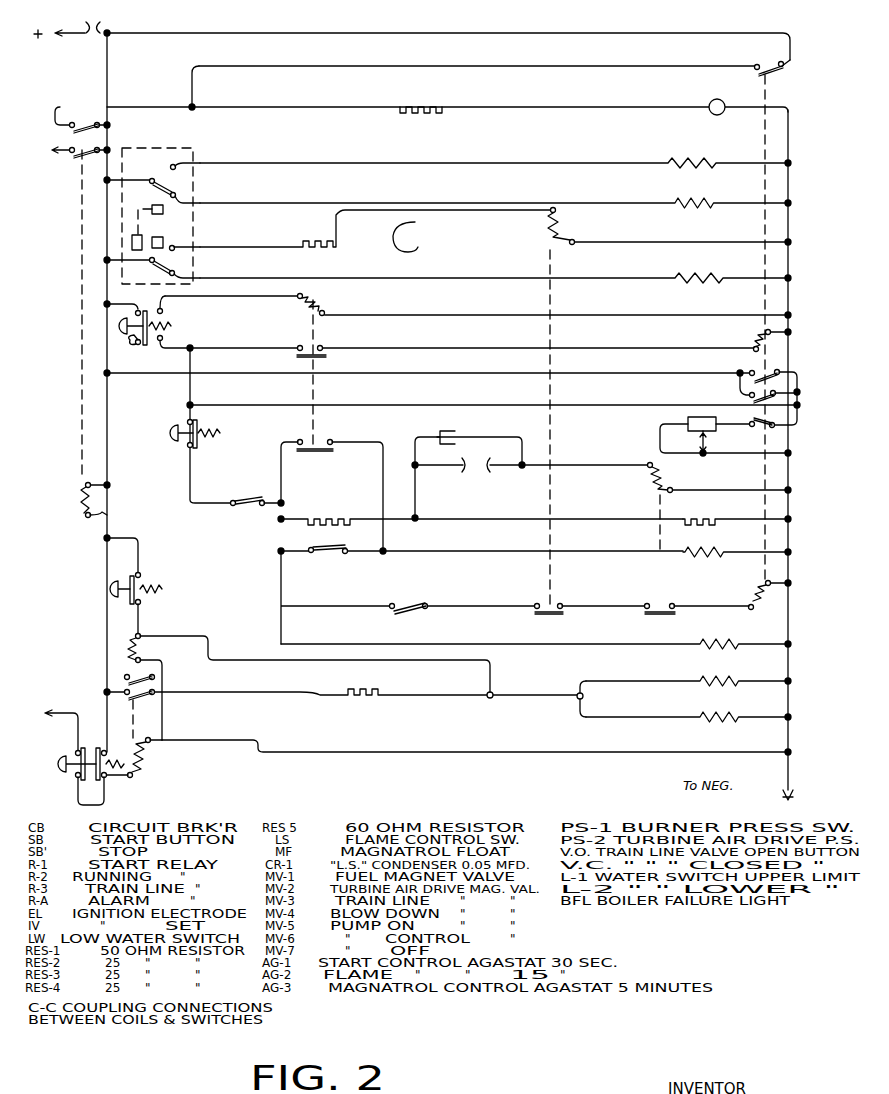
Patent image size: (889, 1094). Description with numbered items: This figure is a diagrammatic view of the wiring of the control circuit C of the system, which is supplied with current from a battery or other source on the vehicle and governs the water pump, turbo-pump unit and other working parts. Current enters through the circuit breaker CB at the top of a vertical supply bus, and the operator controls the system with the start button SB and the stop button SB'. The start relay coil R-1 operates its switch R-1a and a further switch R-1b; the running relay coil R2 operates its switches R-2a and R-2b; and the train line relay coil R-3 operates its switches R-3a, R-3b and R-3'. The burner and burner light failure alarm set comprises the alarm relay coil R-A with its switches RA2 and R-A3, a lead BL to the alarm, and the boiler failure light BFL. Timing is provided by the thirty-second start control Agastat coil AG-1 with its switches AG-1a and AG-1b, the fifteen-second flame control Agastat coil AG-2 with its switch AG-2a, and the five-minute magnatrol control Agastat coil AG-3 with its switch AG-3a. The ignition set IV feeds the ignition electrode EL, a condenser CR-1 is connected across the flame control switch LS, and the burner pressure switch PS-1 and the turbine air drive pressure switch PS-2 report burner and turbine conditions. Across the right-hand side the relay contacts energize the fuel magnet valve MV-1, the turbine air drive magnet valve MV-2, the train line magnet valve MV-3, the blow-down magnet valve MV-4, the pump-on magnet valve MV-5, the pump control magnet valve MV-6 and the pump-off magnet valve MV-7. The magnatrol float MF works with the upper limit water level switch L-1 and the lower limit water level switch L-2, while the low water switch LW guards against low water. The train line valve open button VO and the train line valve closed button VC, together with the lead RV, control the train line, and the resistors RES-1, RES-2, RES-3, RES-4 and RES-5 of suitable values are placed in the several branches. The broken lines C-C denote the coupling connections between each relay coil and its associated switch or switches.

The circuit breaker CB is at (67, 22).
The alarm relay coil R-A is at (76, 86).
The alarm relay switch RA2 is at (90, 119).
The alarm relay switch R-A3 is at (100, 150).
The alarm bell lead BL is at (56, 159).
The magnatrol float MF is at (171, 216).
The upper limit water level switch L-1 is at (152, 183).
The lower limit water level switch L-2 is at (152, 262).
The pump-off magnet valve MV-7 is at (495, 153).
The pump control magnet valve MV-6 is at (495, 194).
The pump-on magnet valve MV-5 is at (495, 269).
The resistor RES-3 is at (375, 238).
The resistor RES-4 is at (419, 119).
The circuit C is at (405, 227).
The magnatrol control Agastat coil AG-3 is at (669, 227).
The start relay switch R-1a is at (767, 61).
The boiler failure light BFL is at (720, 96).
The coupling connections C-C is at (82, 365).
The start control Agastat coil AG-1 is at (478, 303).
The start button SB is at (194, 322).
The start control Agastat switch AG-1a is at (470, 356).
The start relay coil R-1 is at (751, 338).
The start relay switch R-1b is at (770, 366).
The running relay switch R-2a is at (492, 390).
The ignition set IV is at (725, 436).
The ignition electrode EL is at (712, 443).
The running relay switch R-2b is at (772, 440).
The L.S. condenser CR-1 is at (468, 468).
The flame control switch LS is at (531, 470).
The flame control Agastat coil AG-2 is at (720, 478).
The start control Agastat switch AG-1b is at (332, 496).
The stop button SB' is at (212, 425).
The low water switch LW is at (258, 493).
The resistor RES-1 is at (480, 512).
The resistor RES-2 is at (737, 512).
The turbine air drive pressure switch PS-2 is at (480, 560).
The turbine air drive magnet valve MV-2 is at (737, 545).
The running relay coil R2 is at (760, 595).
The burner pressure switch PS-1 is at (408, 597).
The magnatrol control Agastat switch AG-3a is at (588, 618).
The flame control Agastat switch AG-2a is at (694, 618).
The fuel magnet valve MV-1 is at (536, 636).
The train line magnet valve MV-3 is at (685, 687).
The blow-down magnet valve MV-4 is at (688, 710).
The resistor RES-5 is at (368, 687).
The train line valve (open) VO is at (133, 584).
The train line relay coil R-3 is at (309, 687).
The train line relay switch R-3a is at (125, 673).
The train line relay switch R-3b is at (145, 698).
The train line relay switch R-3' is at (158, 758).
The train line valve (closed) VC is at (79, 776).
The relief valve lead RV is at (61, 721).